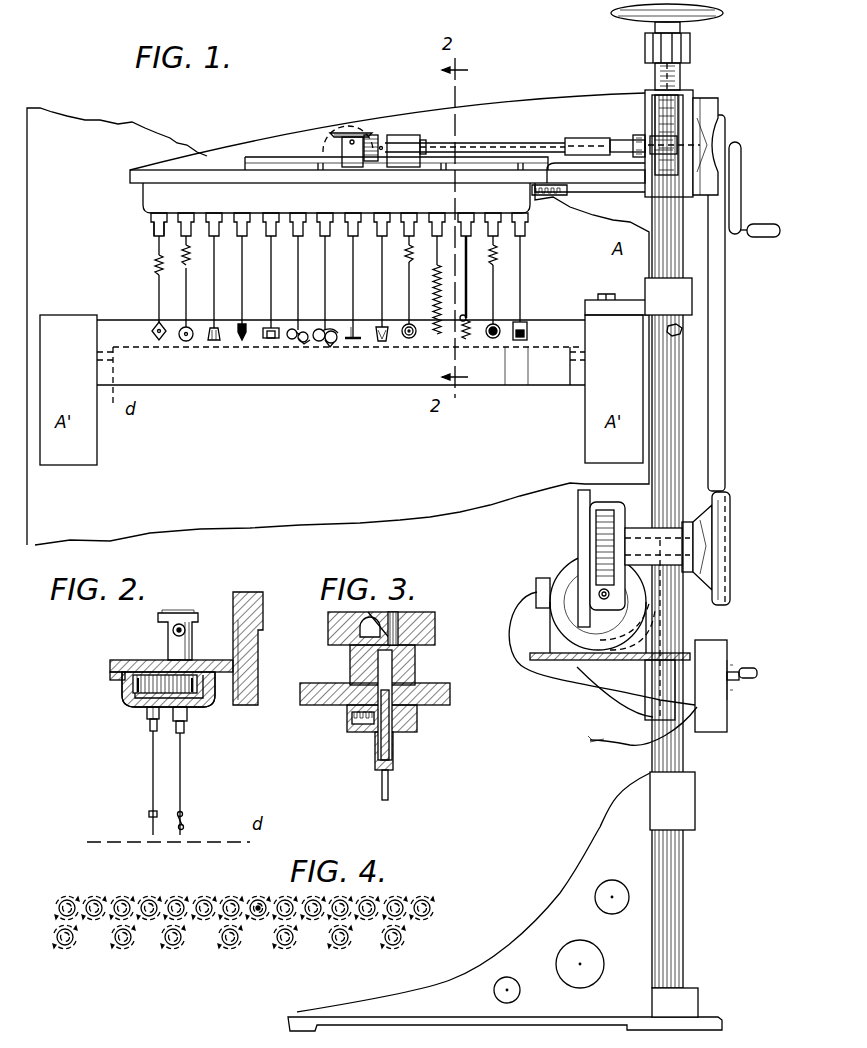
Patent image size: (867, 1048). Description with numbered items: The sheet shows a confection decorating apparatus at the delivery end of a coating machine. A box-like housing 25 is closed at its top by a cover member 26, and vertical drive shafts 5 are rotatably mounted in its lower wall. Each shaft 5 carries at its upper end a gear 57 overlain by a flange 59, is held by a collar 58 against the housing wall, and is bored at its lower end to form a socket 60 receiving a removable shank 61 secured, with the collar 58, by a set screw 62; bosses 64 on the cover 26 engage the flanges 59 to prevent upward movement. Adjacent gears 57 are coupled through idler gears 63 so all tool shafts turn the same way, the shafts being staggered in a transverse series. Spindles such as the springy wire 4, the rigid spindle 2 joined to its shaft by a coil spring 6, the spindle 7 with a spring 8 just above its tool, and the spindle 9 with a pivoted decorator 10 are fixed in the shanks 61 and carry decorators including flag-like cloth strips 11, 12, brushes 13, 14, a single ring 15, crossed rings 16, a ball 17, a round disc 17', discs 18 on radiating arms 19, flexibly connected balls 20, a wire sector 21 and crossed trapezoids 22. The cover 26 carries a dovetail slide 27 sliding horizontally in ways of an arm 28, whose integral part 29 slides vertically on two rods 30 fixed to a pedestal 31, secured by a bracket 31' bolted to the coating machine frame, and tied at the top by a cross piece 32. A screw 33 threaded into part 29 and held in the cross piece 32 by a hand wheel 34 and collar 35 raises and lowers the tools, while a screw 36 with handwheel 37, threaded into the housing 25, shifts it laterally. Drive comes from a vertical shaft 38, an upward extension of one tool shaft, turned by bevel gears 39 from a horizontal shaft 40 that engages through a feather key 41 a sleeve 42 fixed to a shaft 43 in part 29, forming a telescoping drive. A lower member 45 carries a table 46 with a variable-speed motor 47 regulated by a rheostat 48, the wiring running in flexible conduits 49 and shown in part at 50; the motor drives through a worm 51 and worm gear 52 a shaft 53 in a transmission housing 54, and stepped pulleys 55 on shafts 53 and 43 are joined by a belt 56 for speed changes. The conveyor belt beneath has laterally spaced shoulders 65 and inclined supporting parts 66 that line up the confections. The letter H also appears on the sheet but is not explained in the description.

In FIG. 1, the spindle 2 is at (159, 292).
In FIG. 1, the flexible springy wire 4 is at (186, 302).
In FIG. 2, the flexible springy wire 4 is at (152, 780).
In FIG. 3, the flexible springy wire 4 is at (388, 790).
In FIG. 2, the rotary drive shaft 5 is at (150, 722).
In FIG. 3, the rotary drive shaft 5 is at (396, 668).
In FIG. 4, the rotary drive shaft 5 is at (432, 904).
In FIG. 1, the coil spring 6 is at (155, 262).
In FIG. 1, the spindle 7 is at (437, 262).
In FIG. 1, the spring 8 is at (436, 296).
In FIG. 1, the spindle 9 is at (467, 300).
In FIG. 1, the decorator 10 is at (468, 330).
In FIG. 1, the flexible strip decorator 11 is at (528, 330).
In FIG. 1, the flexible strip decorator 12 is at (271, 342).
In FIG. 2, the flexible strip decorator 12 is at (148, 815).
In FIG. 1, the brush decorator 13 is at (242, 342).
In FIG. 1, the brush decorator 14 is at (383, 344).
In FIG. 1, the single ring 15 is at (414, 340).
In FIG. 1, the pair of rings 16 is at (494, 340).
In FIG. 1, the ball 17 is at (181, 350).
In FIG. 1, the round disc 17' is at (363, 354).
In FIG. 1, the round discs 18 is at (323, 342).
In FIG. 1, the arms 19 is at (352, 342).
In FIG. 1, the flexibly connected balls 20 is at (298, 344).
In FIG. 2, the flexibly connected balls 20 is at (186, 818).
In FIG. 1, the sector-shaped wire 21 is at (158, 342).
In FIG. 1, the trapezoidal shapes 22 is at (212, 343).
In FIG. 1, the housing 25 is at (336, 198).
In FIG. 2, the housing 25 is at (125, 700).
In FIG. 3, the housing 25 is at (450, 696).
In FIG. 1, the cover member 26 is at (208, 178).
In FIG. 2, the cover member 26 is at (120, 664).
In FIG. 1, the dovetail slide 27 is at (280, 162).
In FIG. 2, the dovetail slide 27 is at (240, 682).
In FIG. 1, the arm 28 is at (500, 110).
In FIG. 2, the arm 28 is at (250, 660).
In FIG. 1, the vertically sliding member 29 is at (693, 90).
In FIG. 1, the vertical rods 30 is at (683, 340).
In FIG. 1, the pedestal 31 is at (505, 901).
In FIG. 1, the bracket 31' is at (705, 296).
In FIG. 1, the cross piece 32 is at (690, 40).
In FIG. 1, the screw 33 is at (683, 80).
In FIG. 1, the hand wheel 34 is at (724, 12).
In FIG. 1, the collar 35 is at (683, 68).
In FIG. 1, the screw 36 is at (545, 200).
In FIG. 1, the handwheel 37 is at (736, 213).
In FIG. 1, the vertical drive shaft 38 is at (354, 132).
In FIG. 4, the vertical drive shaft 38 is at (260, 905).
In FIG. 1, the bevel gears 39 is at (372, 130).
In FIG. 2, the bevel gears 39 is at (195, 622).
In FIG. 1, the horizontal shaft 40 is at (432, 148).
In FIG. 2, the horizontal shaft 40 is at (172, 625).
In FIG. 1, the feather key 41 is at (558, 148).
In FIG. 1, the sleeve 42 is at (600, 148).
In FIG. 1, the shaft 43 is at (720, 148).
In FIG. 1, the lower sliding member 45 is at (645, 716).
In FIG. 1, the table 46 is at (570, 660).
In FIG. 1, the electric motor 47 is at (566, 566).
In FIG. 1, the rheostat 48 is at (712, 650).
In FIG. 1, the flexible conduits 49 is at (625, 686).
In FIG. 1, the wires 50 is at (590, 742).
In FIG. 1, the worm 51 is at (612, 618).
In FIG. 1, the worm gear 52 is at (584, 518).
In FIG. 1, the transmission shaft 53 is at (730, 548).
In FIG. 1, the transmission housing 54 is at (636, 556).
In FIG. 1, the stepped pulleys 55 is at (702, 108).
In FIG. 1, the belt 56 is at (716, 428).
In FIG. 2, the gear 57 is at (128, 682).
In FIG. 3, the gear 57 is at (436, 628).
In FIG. 4, the gear 57 is at (188, 896).
In FIG. 1, the collar 58 is at (150, 216).
In FIG. 2, the collar 58 is at (148, 712).
In FIG. 3, the collar 58 is at (418, 718).
In FIG. 2, the flange 59 is at (190, 650).
In FIG. 3, the flange 59 is at (400, 612).
In FIG. 4, the flange 59 is at (400, 940).
In FIG. 3, the socket 60 is at (360, 662).
In FIG. 1, the shank 61 is at (154, 230).
In FIG. 2, the shank 61 is at (186, 726).
In FIG. 3, the shank 61 is at (394, 756).
In FIG. 3, the set screw 62 is at (352, 722).
In FIG. 4, the idler gear 63 is at (58, 908).
In FIG. 2, the bosses 64 is at (160, 672).
In FIG. 1, the shoulders 65 is at (516, 347).
In FIG. 1, the inclined supporting parts 66 is at (528, 347).
In FIG. 1, the housing H is at (68, 130).